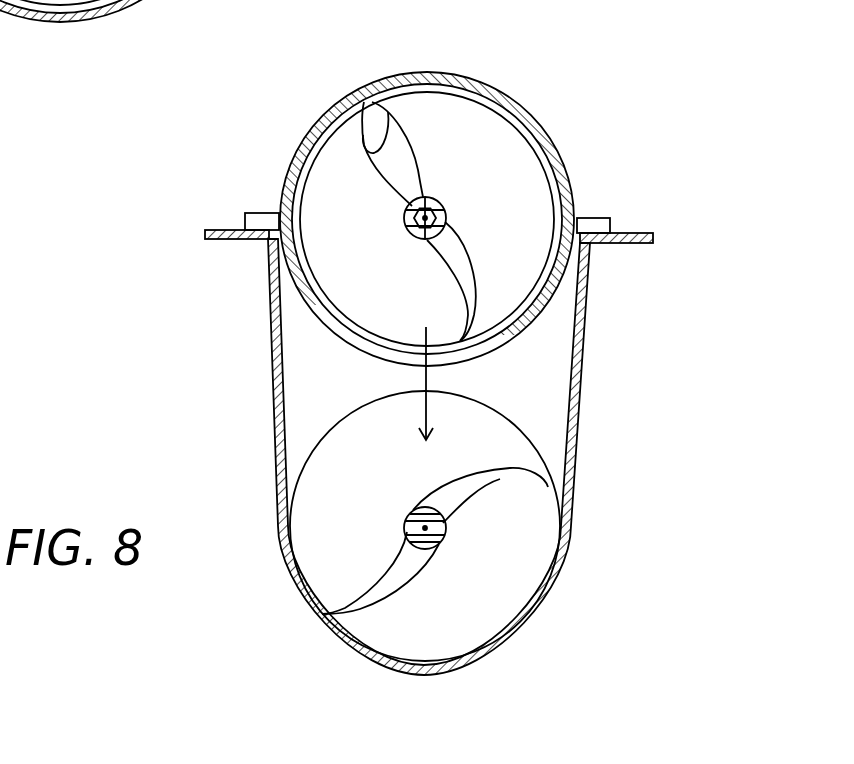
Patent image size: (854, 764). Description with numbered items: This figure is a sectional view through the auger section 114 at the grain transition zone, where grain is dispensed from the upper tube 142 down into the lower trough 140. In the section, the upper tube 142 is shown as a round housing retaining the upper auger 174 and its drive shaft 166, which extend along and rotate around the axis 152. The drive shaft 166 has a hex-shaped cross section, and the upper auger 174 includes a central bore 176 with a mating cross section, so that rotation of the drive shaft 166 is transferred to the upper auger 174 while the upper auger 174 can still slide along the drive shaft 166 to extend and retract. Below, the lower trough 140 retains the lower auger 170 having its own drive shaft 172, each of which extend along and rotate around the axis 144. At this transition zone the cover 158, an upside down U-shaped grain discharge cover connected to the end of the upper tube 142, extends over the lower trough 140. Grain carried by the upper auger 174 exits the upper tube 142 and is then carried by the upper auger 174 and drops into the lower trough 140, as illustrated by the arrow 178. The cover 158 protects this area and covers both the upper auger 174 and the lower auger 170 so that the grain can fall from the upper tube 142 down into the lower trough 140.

The auger section 114 is at (137, 378).
The lower trough 140 is at (575, 430).
The upper tube 142 is at (548, 312).
The axis 144 is at (420, 528).
The axis 152 is at (416, 230).
The cover 158 is at (308, 133).
The drive shaft 166 is at (434, 200).
The lower auger 170 is at (498, 478).
The drive shaft 172 is at (438, 538).
The upper auger 174 is at (400, 124).
The central bore 176 is at (449, 207).
The arrow 178 is at (437, 386).